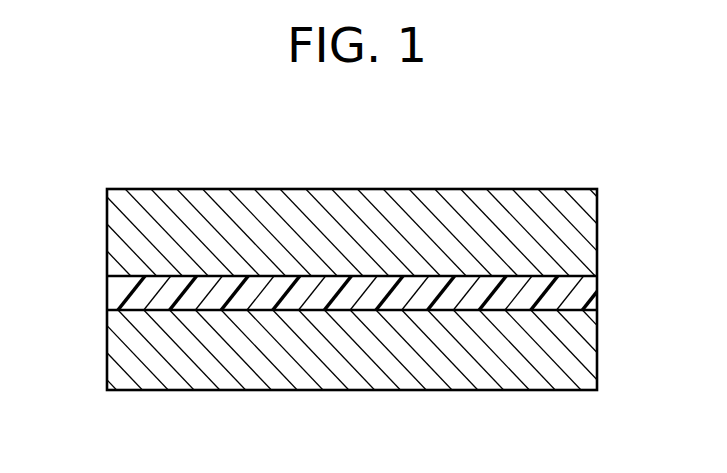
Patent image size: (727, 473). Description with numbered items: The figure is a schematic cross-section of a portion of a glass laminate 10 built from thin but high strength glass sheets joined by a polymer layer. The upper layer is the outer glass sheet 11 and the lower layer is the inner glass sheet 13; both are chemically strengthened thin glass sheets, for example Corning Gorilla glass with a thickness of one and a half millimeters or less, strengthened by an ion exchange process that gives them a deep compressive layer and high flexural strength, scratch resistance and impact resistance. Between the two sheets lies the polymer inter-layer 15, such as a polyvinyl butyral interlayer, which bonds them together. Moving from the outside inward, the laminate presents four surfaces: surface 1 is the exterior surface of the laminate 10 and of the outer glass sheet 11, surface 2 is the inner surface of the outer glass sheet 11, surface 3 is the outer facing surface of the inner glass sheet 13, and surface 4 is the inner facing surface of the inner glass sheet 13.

The surface 1 is at (450, 188).
The surface 2 is at (558, 271).
The surface 3 is at (575, 311).
The surface 4 is at (472, 391).
The glass laminate 10 is at (259, 147).
The outer glass sheet 11 is at (138, 213).
The inner glass sheet 13 is at (173, 375).
The polymer inter-layer 15 is at (118, 290).